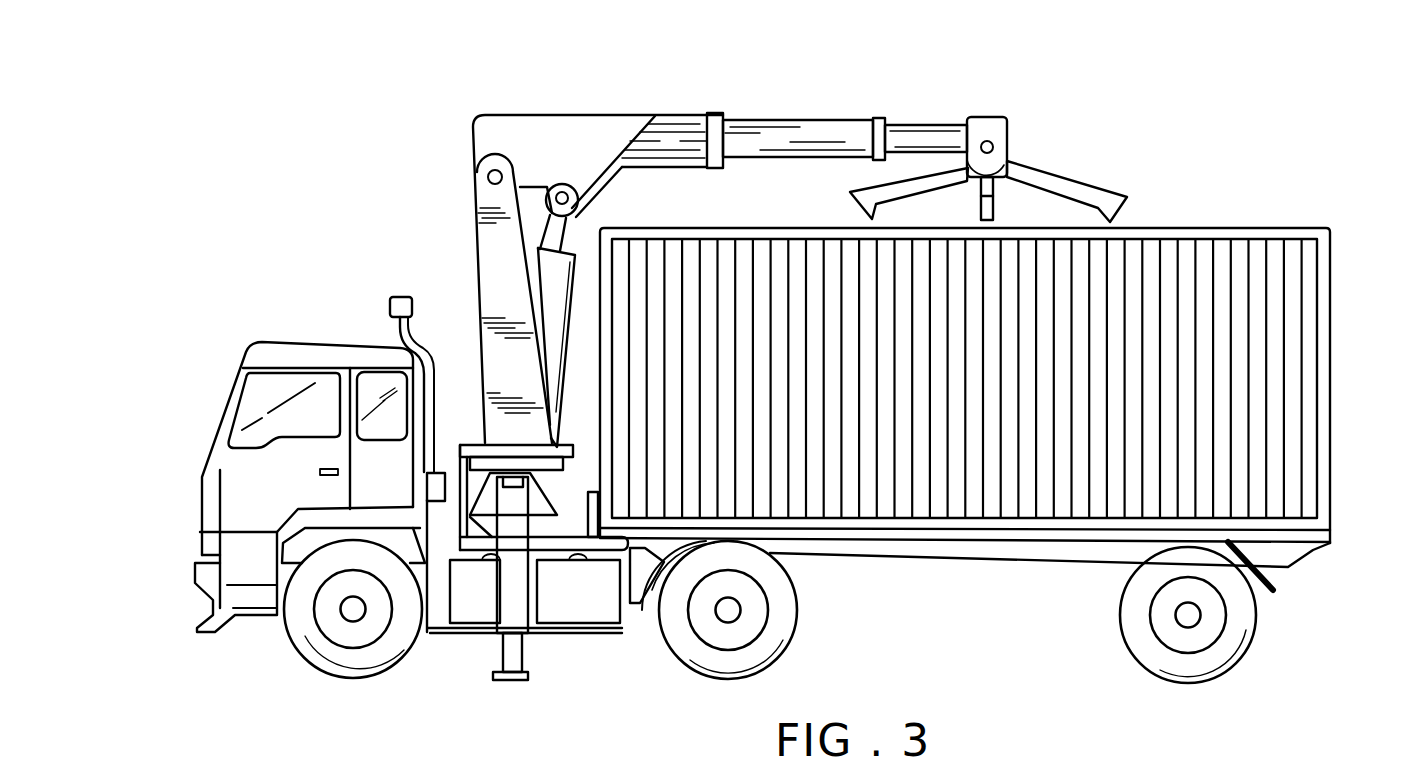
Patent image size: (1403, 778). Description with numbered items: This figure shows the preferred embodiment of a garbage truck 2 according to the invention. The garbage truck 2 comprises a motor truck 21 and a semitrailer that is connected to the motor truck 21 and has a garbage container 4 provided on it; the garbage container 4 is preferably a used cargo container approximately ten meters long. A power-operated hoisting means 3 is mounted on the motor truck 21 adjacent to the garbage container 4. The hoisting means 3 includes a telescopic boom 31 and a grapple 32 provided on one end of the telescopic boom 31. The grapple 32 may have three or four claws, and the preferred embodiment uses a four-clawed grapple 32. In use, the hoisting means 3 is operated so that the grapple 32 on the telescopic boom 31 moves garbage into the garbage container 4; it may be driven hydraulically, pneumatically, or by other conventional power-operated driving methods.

The garbage truck 2 is at (333, 338).
The motor truck 21 is at (222, 507).
The hoisting means 3 is at (628, 113).
The telescopic boom 31 is at (930, 122).
The grapple 32 is at (1068, 182).
The garbage container 4 is at (1310, 442).